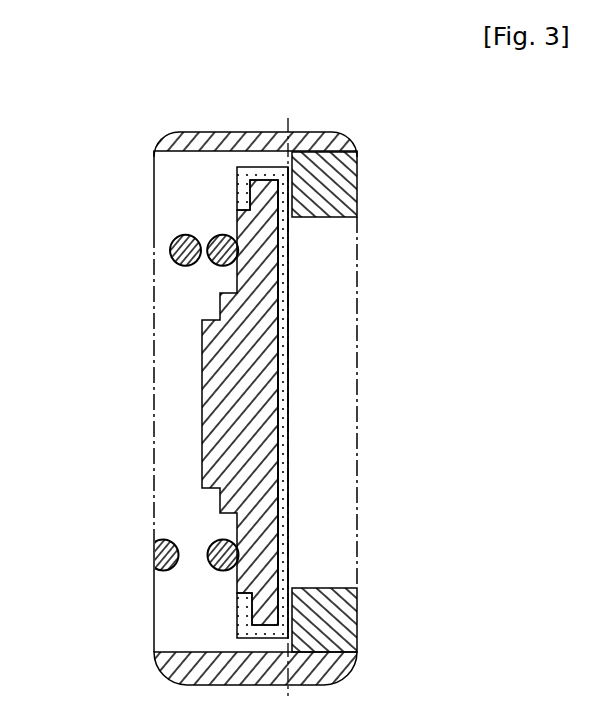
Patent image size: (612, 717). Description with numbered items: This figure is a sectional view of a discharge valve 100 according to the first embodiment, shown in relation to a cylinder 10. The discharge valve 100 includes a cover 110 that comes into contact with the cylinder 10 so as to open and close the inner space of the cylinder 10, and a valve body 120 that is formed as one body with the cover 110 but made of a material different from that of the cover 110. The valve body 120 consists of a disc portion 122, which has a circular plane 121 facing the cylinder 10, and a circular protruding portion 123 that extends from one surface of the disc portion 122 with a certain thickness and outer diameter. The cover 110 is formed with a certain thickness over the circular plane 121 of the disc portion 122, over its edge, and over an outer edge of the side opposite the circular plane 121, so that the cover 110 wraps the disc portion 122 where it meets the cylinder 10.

The discharge valve 100 is at (270, 109).
The cylinder 10 is at (327, 622).
The cover 110 is at (298, 501).
The valve body 120 is at (202, 303).
The circular plane 121 is at (290, 307).
The disc portion 122 is at (290, 245).
The circular protruding portion 123 is at (217, 435).